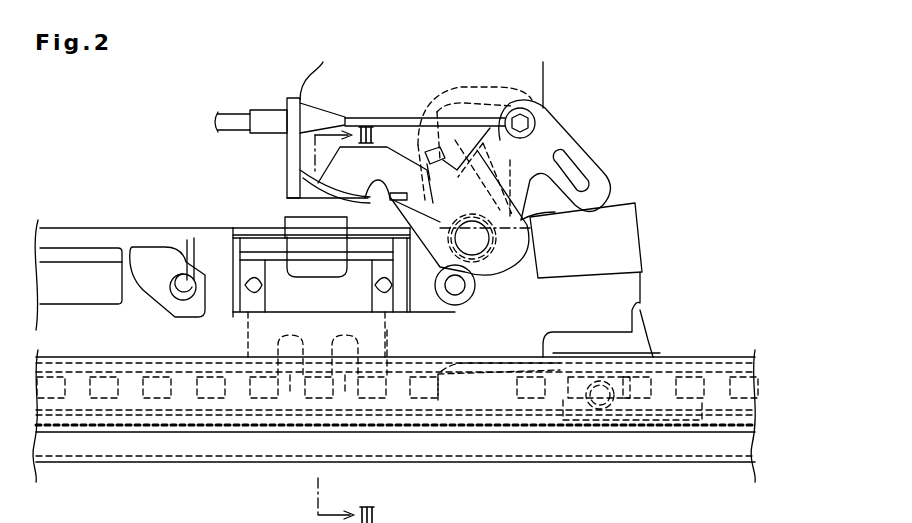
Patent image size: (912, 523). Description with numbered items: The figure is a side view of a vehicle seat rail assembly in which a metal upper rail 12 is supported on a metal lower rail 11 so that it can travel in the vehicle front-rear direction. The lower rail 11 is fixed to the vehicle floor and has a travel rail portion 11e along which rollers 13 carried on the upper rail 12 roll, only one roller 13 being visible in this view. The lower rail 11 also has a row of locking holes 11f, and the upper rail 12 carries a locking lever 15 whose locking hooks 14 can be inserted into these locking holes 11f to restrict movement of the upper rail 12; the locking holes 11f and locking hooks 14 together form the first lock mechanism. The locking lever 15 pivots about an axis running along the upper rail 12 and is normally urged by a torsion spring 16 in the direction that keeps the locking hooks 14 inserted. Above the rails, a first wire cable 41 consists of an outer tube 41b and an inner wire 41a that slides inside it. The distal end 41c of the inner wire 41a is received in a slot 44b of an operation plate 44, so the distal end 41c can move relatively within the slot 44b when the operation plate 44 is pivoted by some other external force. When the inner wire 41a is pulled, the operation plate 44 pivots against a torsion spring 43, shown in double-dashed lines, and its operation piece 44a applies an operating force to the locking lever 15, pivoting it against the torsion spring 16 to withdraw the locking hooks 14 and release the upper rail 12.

The lower rail 11 is at (726, 357).
The travel rail portion 11e is at (545, 415).
The locking hole 11f is at (160, 398).
The upper rail 12 is at (96, 228).
The roller 13 is at (625, 405).
The locking hook 14 is at (372, 400).
The locking lever 15 is at (292, 217).
The torsion spring 16 is at (268, 266).
The first wire cable 41 is at (346, 117).
The inner wire 41a is at (395, 117).
The outer tube 41b is at (228, 114).
The distal end 41c is at (520, 107).
The torsion spring 43 is at (467, 168).
The operation plate 44 is at (598, 157).
The operation piece 44a is at (300, 183).
The slot 44b is at (567, 153).